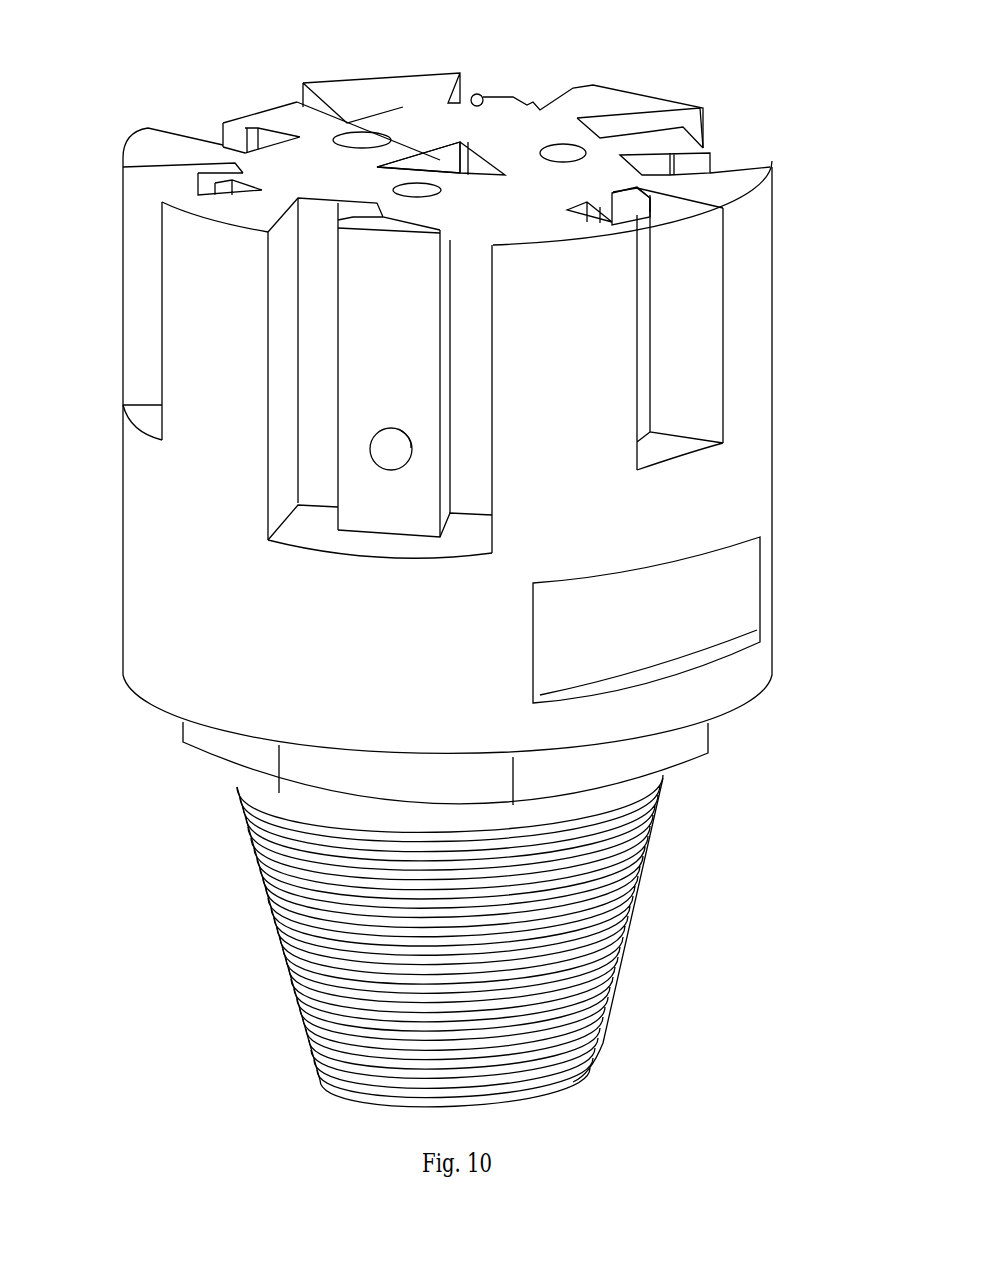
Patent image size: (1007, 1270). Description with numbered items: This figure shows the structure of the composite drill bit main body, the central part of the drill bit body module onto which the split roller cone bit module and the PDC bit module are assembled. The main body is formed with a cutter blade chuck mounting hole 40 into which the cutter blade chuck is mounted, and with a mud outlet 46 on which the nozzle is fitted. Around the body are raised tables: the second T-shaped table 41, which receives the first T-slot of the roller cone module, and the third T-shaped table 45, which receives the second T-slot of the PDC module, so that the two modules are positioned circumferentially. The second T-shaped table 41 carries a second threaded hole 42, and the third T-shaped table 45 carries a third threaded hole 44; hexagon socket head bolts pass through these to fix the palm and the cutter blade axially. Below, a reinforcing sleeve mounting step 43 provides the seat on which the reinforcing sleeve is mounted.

The cutter blade chuck mounting hole 40 is at (447, 165).
The second T-shaped table 41 is at (383, 356).
The second threaded hole 42 is at (383, 450).
The reinforcing sleeve mounting step 43 is at (330, 775).
The third threaded hole 44 is at (638, 390).
The third T-shaped table 45 is at (640, 230).
The mud outlet 46 is at (565, 152).